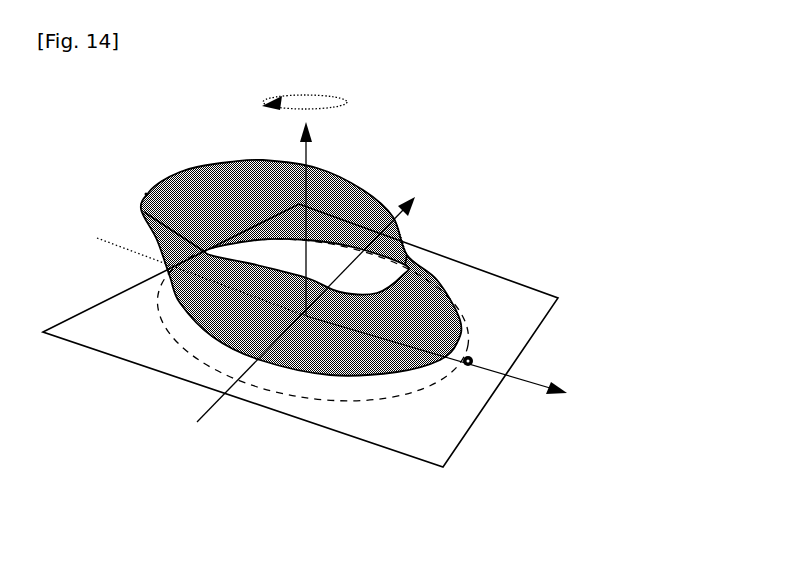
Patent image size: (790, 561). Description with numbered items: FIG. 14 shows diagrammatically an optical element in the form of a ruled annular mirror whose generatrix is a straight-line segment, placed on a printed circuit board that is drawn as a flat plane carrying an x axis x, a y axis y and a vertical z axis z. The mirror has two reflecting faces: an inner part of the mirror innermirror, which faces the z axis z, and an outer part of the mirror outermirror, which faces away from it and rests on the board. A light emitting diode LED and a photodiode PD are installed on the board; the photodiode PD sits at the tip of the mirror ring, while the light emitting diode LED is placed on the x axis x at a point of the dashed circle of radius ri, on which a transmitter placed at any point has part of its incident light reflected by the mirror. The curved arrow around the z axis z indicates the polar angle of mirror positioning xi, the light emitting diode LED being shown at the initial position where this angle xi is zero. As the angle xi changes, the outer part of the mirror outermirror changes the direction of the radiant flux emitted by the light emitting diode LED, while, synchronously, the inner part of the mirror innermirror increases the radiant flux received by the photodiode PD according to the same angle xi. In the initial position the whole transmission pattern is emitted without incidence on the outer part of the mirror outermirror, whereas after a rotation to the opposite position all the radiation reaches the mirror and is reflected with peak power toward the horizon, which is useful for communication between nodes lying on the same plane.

The photodiode PD is at (146, 193).
The inner part of the mirror innermirror is at (224, 205).
The outer part of the mirror outermirror is at (337, 353).
The light emitting diode LED is at (470, 356).
The circle of radius r_i ri is at (369, 362).
The x axis x is at (339, 322).
The y axis y is at (314, 295).
The z axis z is at (314, 219).
The angle of mirror positioning xi is at (315, 105).